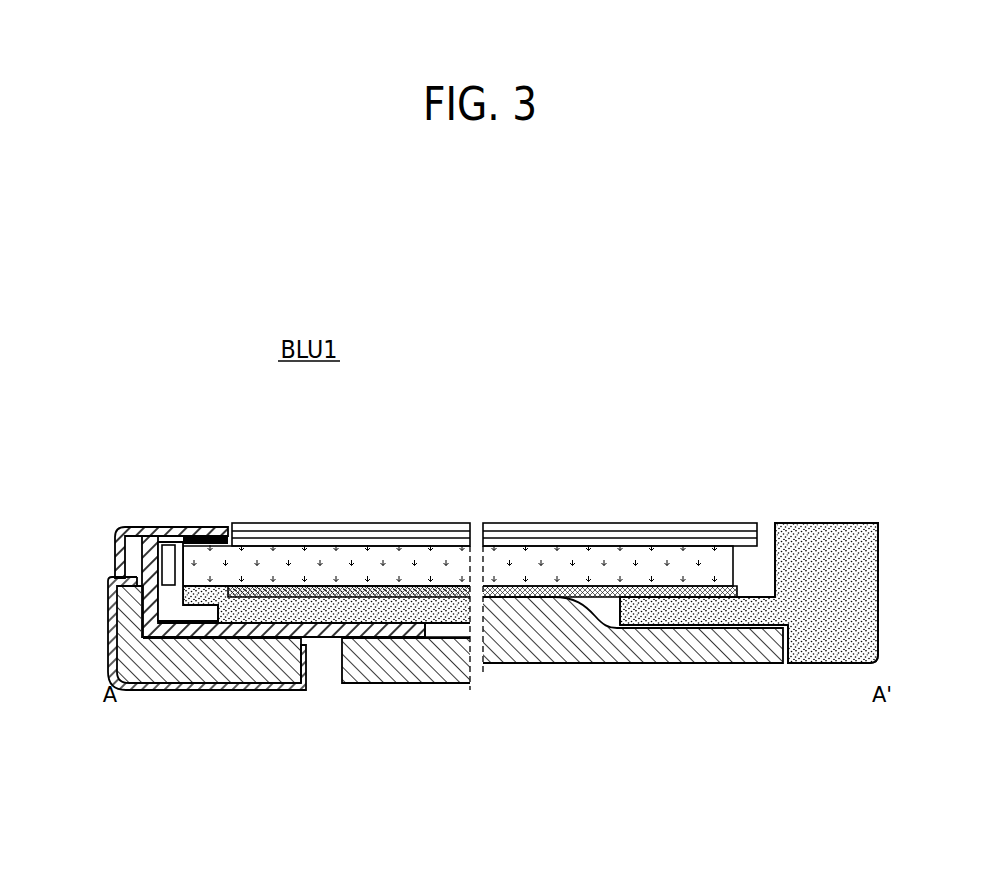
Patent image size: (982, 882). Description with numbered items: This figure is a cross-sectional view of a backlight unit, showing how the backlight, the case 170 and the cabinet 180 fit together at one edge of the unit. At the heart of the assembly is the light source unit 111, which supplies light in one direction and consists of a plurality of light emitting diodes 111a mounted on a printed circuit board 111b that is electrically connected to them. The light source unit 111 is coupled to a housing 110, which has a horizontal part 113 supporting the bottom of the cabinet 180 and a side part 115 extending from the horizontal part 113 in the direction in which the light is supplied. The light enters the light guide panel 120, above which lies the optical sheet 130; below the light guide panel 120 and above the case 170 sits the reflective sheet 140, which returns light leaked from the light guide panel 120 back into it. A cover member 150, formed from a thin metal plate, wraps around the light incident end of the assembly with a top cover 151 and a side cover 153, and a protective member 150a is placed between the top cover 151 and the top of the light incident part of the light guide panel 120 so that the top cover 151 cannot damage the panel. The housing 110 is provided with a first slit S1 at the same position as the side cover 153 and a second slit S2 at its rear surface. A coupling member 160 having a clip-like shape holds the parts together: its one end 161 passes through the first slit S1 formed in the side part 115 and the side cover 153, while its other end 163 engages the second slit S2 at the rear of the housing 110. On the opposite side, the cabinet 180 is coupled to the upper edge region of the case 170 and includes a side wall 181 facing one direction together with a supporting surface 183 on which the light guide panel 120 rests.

The housing 110 is at (209, 686).
The light source unit 111 is at (278, 547).
The light emitting diodes 111a is at (173, 566).
The printed circuit board 111b is at (162, 610).
The horizontal part 113 is at (227, 667).
The side part 115 is at (133, 596).
The light guide panel 120 is at (648, 563).
The optical sheet 130 is at (693, 512).
The reflective sheet 140 is at (603, 592).
The cover member 150 is at (270, 510).
The protective member 150a is at (213, 537).
The top cover 151 is at (183, 532).
The side cover 153 is at (150, 600).
The coupling member 160 is at (197, 716).
The one end of coupling member 161 is at (108, 602).
The other end of coupling member 163 is at (215, 727).
The case 170 is at (572, 635).
The cabinet 180 is at (749, 647).
The side wall 181 is at (825, 607).
The supporting surface 183 is at (443, 607).
The first slit S1 is at (113, 578).
The second slit S2 is at (324, 656).